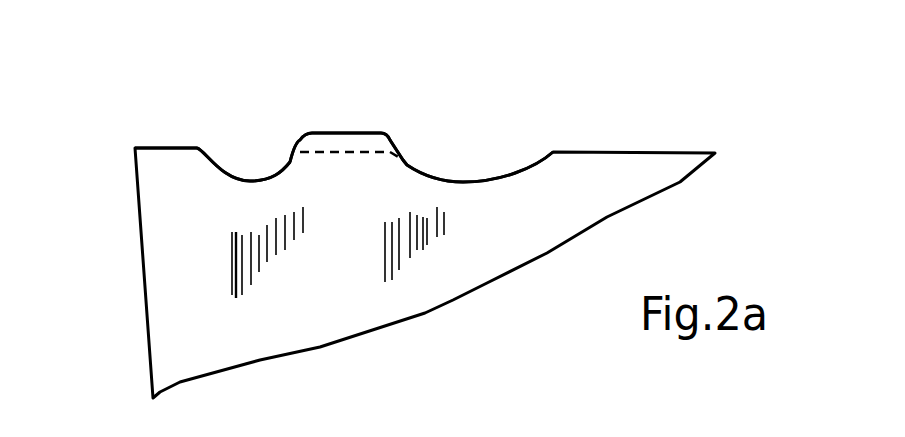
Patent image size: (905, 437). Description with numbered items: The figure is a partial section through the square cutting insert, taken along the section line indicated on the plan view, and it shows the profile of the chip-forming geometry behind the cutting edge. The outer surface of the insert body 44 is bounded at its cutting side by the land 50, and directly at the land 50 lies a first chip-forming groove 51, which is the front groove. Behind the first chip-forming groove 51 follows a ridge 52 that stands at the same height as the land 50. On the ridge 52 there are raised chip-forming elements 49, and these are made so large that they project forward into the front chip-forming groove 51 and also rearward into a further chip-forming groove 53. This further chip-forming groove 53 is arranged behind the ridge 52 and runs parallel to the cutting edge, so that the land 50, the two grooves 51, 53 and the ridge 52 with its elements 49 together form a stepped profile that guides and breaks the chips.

The sensor tooth / mounting plate 44 is at (144, 277).
The raised chip-forming elements 49 is at (353, 132).
The land 50 is at (173, 148).
The first chip-forming groove 51 is at (238, 168).
The ridge 52 is at (350, 153).
The further chip-forming groove 53 is at (482, 183).